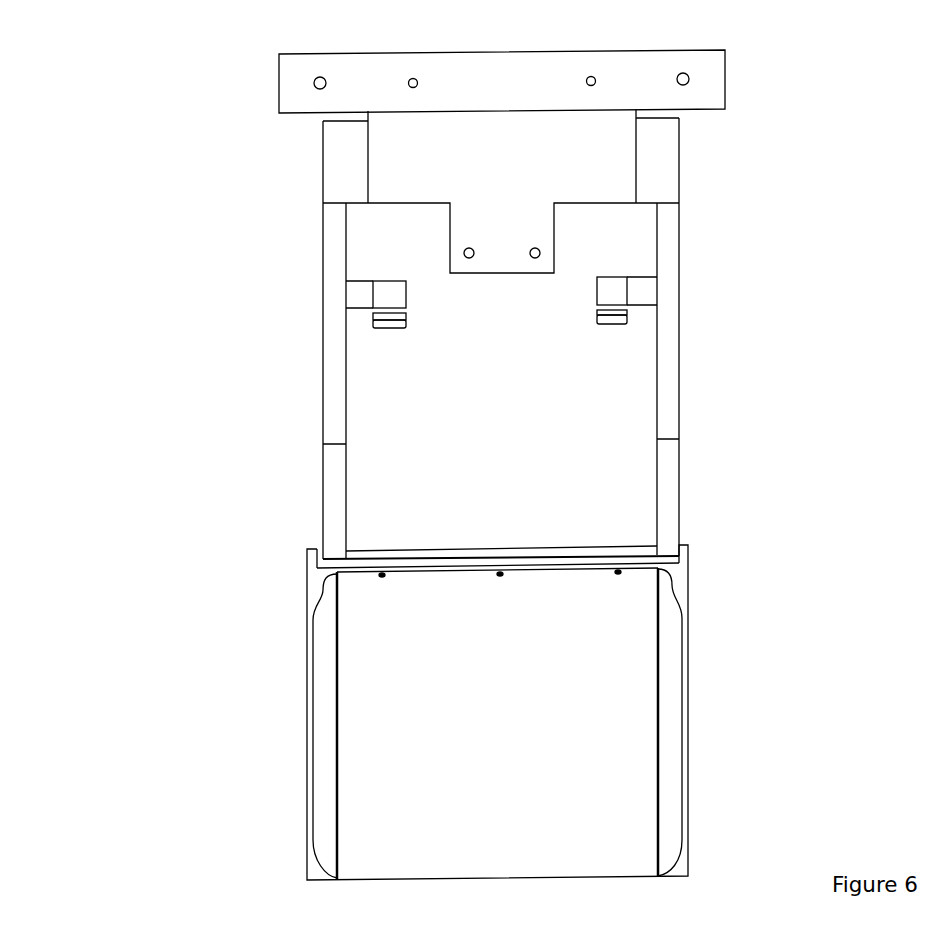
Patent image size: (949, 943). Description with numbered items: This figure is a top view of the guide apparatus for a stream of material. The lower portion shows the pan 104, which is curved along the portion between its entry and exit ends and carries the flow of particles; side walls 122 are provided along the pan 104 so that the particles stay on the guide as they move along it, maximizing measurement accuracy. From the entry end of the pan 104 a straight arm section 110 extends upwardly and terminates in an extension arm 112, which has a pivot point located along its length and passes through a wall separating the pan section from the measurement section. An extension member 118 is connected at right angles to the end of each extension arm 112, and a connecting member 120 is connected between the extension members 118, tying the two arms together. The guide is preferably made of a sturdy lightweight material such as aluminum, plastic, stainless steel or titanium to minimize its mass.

The pan 104 is at (482, 742).
The straight arm section 110 is at (333, 483).
The extension arm 112 is at (335, 355).
The extension member 118 is at (390, 295).
The connecting member 120 is at (353, 67).
The side walls 122 is at (325, 708).